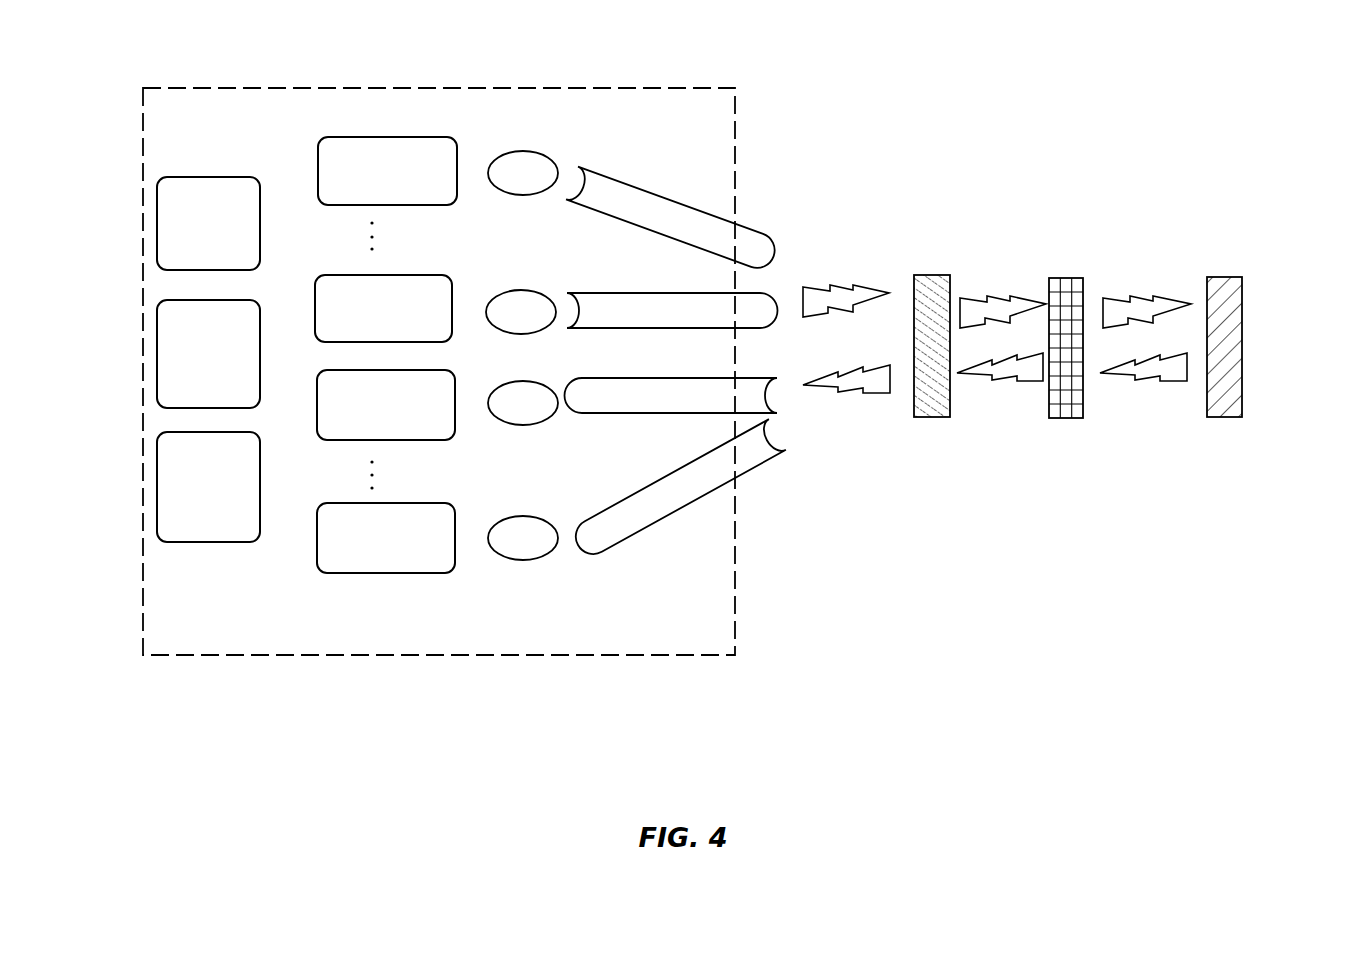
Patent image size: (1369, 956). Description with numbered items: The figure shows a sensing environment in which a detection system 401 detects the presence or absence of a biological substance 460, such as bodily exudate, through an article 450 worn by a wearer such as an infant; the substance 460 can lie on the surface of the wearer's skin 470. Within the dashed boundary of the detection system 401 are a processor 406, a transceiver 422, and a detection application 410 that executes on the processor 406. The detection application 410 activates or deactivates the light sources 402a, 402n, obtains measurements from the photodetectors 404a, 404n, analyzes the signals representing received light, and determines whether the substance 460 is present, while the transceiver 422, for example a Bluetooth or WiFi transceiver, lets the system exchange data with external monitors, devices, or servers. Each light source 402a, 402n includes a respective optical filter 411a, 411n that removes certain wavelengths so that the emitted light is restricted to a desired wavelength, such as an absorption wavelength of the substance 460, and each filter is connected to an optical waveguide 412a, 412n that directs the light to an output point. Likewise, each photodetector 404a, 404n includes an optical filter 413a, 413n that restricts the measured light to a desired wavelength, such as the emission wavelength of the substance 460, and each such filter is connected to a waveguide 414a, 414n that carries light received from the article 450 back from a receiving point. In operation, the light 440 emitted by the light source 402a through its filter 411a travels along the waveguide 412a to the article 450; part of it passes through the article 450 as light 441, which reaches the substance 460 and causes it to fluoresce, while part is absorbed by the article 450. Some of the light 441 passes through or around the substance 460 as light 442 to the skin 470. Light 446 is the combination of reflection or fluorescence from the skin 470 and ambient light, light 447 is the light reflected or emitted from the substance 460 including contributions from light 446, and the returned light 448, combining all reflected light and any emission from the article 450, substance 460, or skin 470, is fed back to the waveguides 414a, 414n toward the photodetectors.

The detection system 401 is at (135, 78).
The processor 406 is at (208, 223).
The transceiver 422 is at (208, 354).
The detection application 410 is at (208, 487).
The light source 402n is at (387, 171).
The light source 402a is at (383, 308).
The photodetector 404n is at (386, 405).
The photodetector 404a is at (386, 538).
The optical filter 411n is at (523, 173).
The optical filter 411a is at (521, 312).
The waveguide 412n is at (673, 220).
The waveguide 412a is at (672, 310).
The optical filter 413n is at (523, 403).
The optical filter 413a is at (523, 538).
The waveguide 414n is at (671, 395).
The waveguide 414a is at (678, 489).
The light 440 is at (846, 255).
The light 441 is at (998, 280).
The light 442 is at (1163, 288).
The light 446 is at (1149, 398).
The light 447 is at (1001, 398).
The returned light 448 is at (868, 415).
The article 450 is at (930, 260).
The substance 460 is at (1065, 266).
The skin 470 is at (1248, 270).